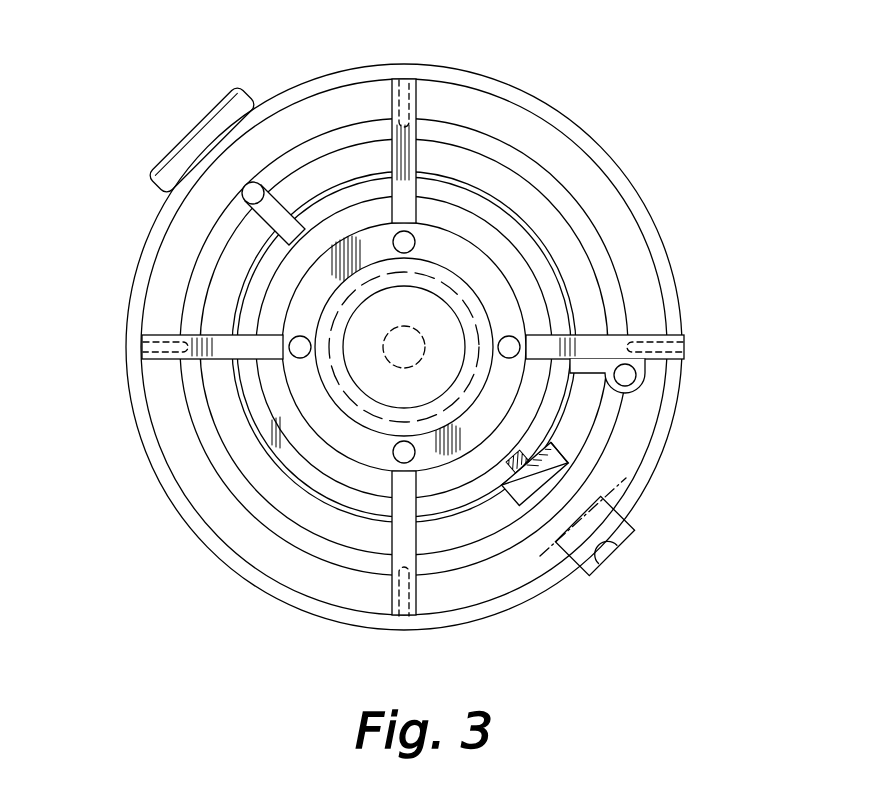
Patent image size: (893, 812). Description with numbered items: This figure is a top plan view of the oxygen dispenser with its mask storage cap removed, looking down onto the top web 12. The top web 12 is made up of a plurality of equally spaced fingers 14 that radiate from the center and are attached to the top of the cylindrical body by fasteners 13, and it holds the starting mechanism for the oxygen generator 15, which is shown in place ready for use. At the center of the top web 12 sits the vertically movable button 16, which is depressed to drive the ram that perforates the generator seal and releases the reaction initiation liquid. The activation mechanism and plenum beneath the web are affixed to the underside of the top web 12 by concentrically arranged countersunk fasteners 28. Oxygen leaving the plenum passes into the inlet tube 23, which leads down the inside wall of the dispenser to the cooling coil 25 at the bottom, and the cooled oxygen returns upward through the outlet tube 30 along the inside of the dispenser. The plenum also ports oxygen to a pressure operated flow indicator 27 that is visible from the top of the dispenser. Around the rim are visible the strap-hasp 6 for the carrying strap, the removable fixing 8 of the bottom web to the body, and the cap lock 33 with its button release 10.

The strap-hasp 6 is at (160, 152).
The removable fixing 8 is at (666, 492).
The button release 10 is at (630, 549).
The top web 12 is at (528, 322).
The fasteners 13 is at (408, 60).
The fingers 14 is at (420, 92).
The oxygen generator 15 is at (560, 250).
The vertically movable button 16 is at (345, 320).
The inlet tube 23 is at (266, 182).
The cooling coil 25 is at (270, 537).
The pressure operated flow indicator 27 is at (560, 457).
The countersunk fasteners 28 is at (513, 330).
The outlet tube 30 is at (648, 378).
The cap lock 33 is at (565, 560).